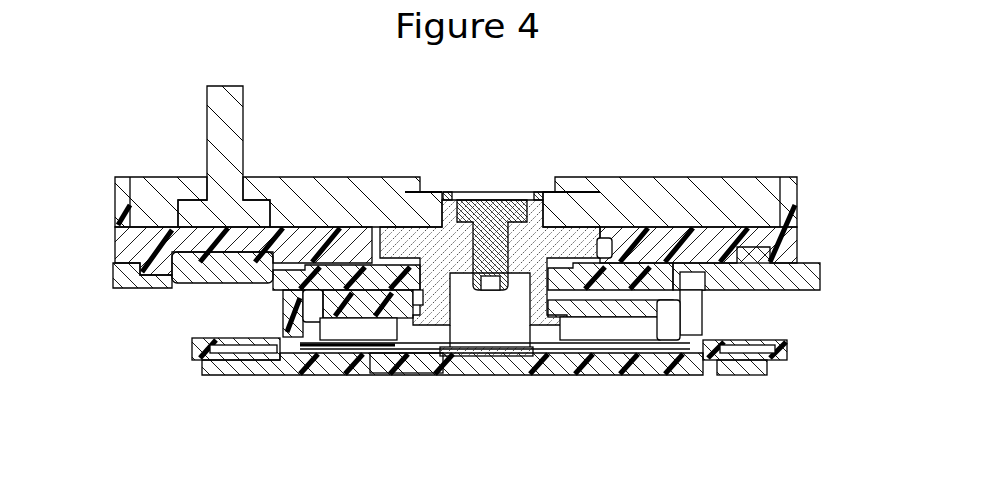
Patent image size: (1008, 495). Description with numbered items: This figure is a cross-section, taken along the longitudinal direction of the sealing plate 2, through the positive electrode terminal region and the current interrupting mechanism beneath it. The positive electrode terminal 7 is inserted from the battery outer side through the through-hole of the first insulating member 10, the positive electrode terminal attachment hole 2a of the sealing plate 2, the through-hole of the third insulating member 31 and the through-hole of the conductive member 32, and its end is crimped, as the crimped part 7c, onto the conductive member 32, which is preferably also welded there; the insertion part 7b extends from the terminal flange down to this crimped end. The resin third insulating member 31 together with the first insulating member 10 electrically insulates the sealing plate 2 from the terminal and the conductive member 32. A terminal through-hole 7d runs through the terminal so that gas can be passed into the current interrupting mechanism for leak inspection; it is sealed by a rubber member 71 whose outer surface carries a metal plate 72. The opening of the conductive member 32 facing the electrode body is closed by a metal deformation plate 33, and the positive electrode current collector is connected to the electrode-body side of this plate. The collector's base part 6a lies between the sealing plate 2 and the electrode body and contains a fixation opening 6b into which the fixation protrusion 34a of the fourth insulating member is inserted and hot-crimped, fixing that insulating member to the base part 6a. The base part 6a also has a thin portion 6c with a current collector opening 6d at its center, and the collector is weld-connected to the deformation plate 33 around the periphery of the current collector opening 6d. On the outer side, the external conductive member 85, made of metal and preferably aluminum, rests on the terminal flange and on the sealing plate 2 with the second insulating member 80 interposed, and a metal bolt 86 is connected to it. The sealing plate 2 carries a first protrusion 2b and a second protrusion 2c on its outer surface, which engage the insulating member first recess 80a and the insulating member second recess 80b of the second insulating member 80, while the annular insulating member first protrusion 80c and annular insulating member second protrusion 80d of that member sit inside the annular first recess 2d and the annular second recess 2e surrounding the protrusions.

The sealing plate 2 is at (820, 263).
The positive electrode terminal attachment hole 2a is at (392, 340).
The first protrusion 2b is at (252, 222).
The second protrusion 2c is at (718, 250).
The annular first recess 2d is at (305, 227).
The annular second recess 2e is at (768, 240).
The base part 6a is at (435, 355).
The fixation opening 6b is at (292, 362).
The thin portion 6c is at (462, 356).
The current collector opening 6d is at (490, 356).
The positive electrode terminal 7 is at (490, 258).
The insertion part 7b is at (452, 297).
The crimped part 7c is at (547, 323).
The terminal through-hole 7d is at (455, 197).
The first insulating member 10 is at (612, 257).
The third insulating member 31 is at (240, 372).
The conductive member 32 is at (630, 312).
The deformation plate 33 is at (340, 352).
The fixation protrusion 34a is at (313, 353).
The rubber member 71 is at (490, 215).
The metal plate 72 is at (508, 192).
The second insulating member 80 is at (147, 240).
The insulating member first recess 80a is at (195, 268).
The insulating member second recess 80b is at (735, 357).
The annular insulating member first protrusion 80c is at (153, 285).
The annular insulating member second protrusion 80d is at (767, 317).
The external conductive member 85 is at (403, 195).
The bolt 86 is at (215, 133).